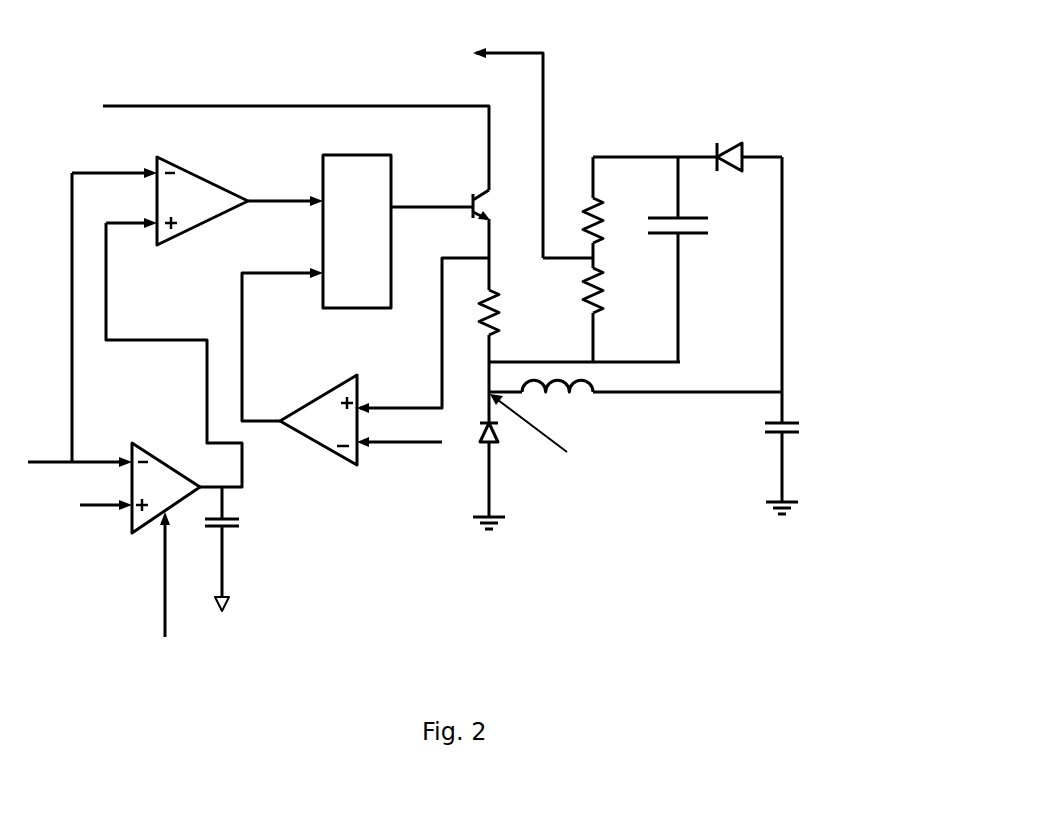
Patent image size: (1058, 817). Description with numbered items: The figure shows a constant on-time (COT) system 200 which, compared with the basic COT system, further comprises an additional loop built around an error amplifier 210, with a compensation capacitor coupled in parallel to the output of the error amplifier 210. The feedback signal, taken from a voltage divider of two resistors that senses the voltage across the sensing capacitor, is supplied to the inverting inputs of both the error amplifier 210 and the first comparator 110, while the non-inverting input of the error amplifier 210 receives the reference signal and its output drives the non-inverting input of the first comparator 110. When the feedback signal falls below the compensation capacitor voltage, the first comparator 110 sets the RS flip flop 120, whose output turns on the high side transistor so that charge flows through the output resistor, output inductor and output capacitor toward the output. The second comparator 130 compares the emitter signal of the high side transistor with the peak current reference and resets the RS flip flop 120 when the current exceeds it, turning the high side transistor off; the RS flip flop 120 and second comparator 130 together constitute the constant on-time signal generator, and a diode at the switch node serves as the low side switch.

The COT system 200 is at (414, 51).
The first comparator 110 is at (202, 201).
The RS flip flop 120 is at (357, 231).
The second comparator 130 is at (318, 420).
The error amplifier 210 is at (166, 488).